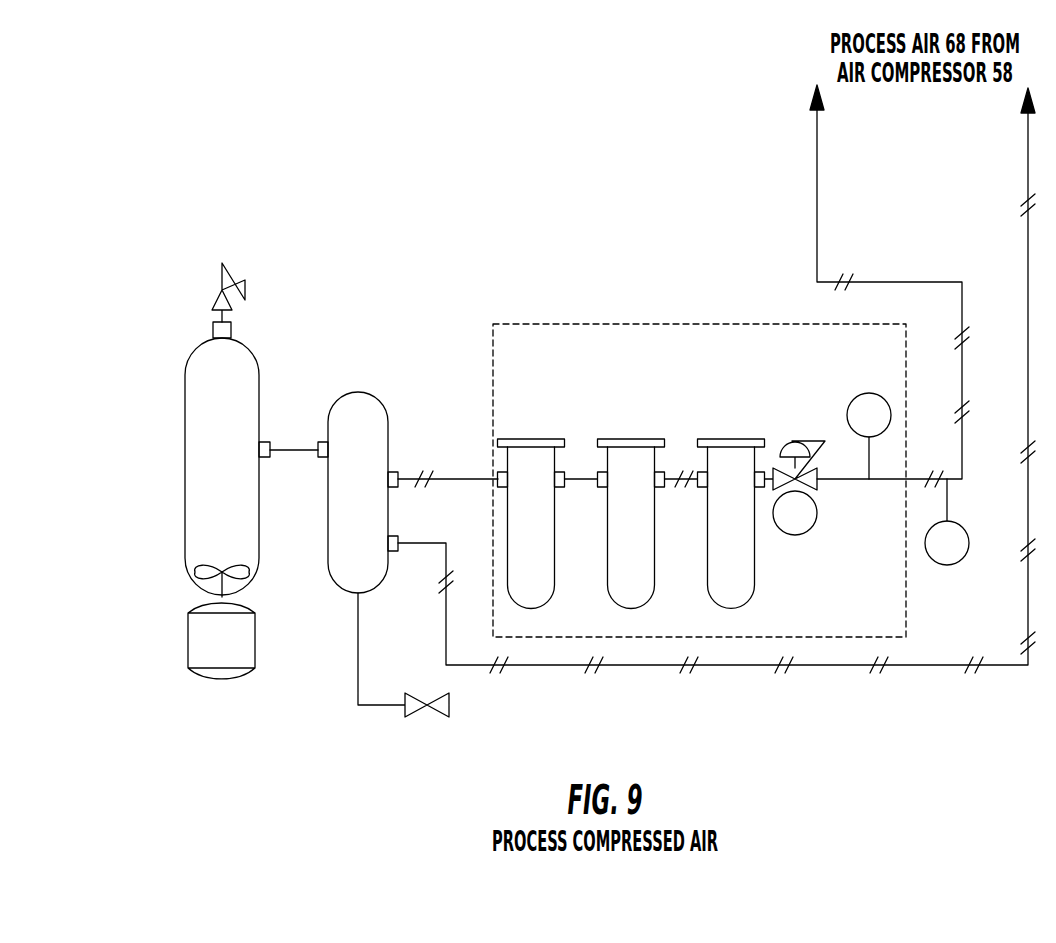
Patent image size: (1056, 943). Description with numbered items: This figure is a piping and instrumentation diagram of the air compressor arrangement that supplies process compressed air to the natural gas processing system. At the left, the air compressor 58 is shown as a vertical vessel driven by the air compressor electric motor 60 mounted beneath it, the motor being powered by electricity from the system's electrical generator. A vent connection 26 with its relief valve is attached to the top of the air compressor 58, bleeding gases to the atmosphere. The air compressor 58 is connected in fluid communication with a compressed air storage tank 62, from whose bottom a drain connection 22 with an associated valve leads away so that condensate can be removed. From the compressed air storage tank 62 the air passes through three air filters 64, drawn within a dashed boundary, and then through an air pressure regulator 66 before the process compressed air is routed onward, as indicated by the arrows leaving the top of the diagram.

The drain connection 22 is at (449, 705).
The vent connection 26 is at (245, 289).
The air compressor 58 is at (197, 363).
The air compressor electric motor 60 is at (198, 638).
The compressed air storage tank 62 is at (337, 555).
The air filters 64 is at (645, 583).
The air pressure regulator 66 is at (790, 445).